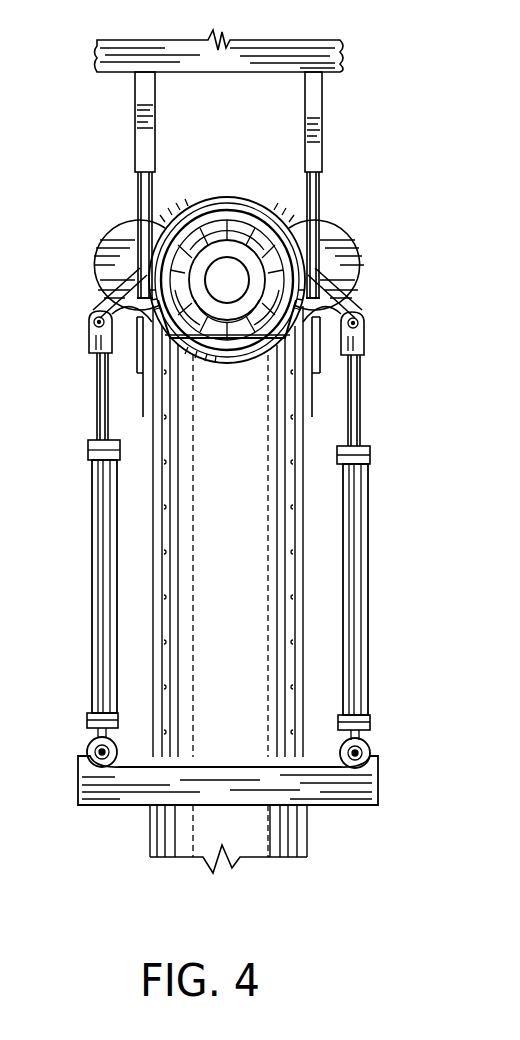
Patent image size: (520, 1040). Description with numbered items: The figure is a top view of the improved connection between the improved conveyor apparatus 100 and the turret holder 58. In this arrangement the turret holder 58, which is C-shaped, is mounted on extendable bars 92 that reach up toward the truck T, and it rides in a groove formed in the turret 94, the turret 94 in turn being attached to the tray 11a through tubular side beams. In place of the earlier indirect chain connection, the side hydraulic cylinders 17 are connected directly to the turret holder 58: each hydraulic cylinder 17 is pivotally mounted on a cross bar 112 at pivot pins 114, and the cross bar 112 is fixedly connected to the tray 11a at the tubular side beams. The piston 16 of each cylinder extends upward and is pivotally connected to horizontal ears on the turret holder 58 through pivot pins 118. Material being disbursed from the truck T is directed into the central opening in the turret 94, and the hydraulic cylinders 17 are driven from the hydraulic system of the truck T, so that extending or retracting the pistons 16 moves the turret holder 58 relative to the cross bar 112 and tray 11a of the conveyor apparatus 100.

The truck T is at (328, 60).
The extendable bars 92 is at (145, 145).
The turret 94 is at (193, 197).
The turret holder 58 is at (245, 200).
The pivot pins 118 is at (90, 320).
The piston 16 is at (98, 403).
The hydraulic cylinders 17 is at (100, 621).
The pivot pins 114 is at (88, 745).
The cross bar 112 is at (358, 777).
The tray 11a is at (155, 832).
The improved conveyor apparatus 100 is at (343, 837).